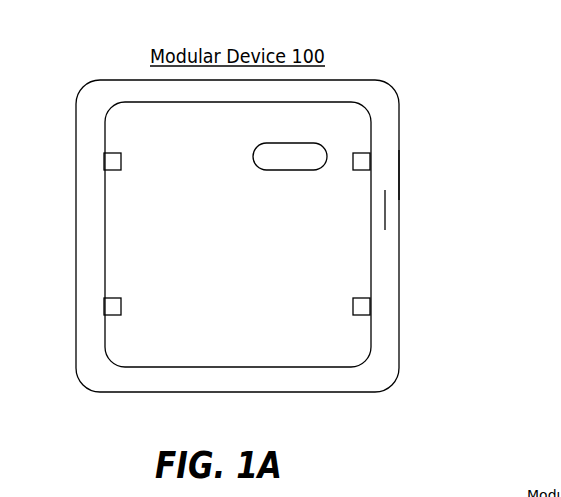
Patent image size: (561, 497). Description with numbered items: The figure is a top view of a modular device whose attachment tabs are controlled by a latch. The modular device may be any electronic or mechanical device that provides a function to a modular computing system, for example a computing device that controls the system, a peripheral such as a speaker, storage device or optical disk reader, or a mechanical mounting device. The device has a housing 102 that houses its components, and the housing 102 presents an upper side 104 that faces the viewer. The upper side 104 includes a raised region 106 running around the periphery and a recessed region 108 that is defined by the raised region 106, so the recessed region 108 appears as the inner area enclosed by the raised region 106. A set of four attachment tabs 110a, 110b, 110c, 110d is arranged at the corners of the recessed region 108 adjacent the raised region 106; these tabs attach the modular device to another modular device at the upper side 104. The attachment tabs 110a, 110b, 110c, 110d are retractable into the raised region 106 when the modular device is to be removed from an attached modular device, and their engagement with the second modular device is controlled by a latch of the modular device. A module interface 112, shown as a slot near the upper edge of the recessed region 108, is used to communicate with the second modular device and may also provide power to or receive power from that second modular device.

The housing 102 is at (399, 168).
The upper side 104 is at (415, 79).
The raised region 106 is at (382, 210).
The recessed region 108 is at (333, 262).
The attachment tab 110a is at (110, 152).
The attachment tab 110b is at (110, 298).
The attachment tab 110c is at (362, 152).
The attachment tab 110d is at (355, 300).
The module interface 112 is at (296, 171).